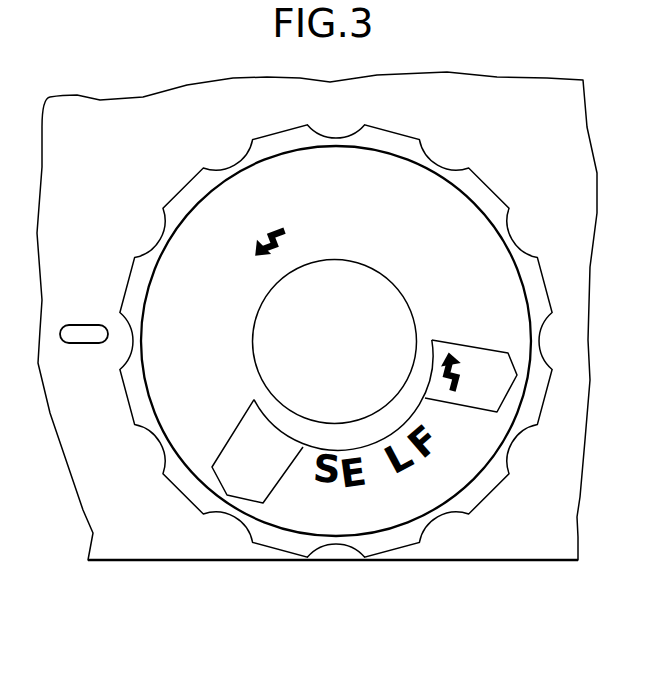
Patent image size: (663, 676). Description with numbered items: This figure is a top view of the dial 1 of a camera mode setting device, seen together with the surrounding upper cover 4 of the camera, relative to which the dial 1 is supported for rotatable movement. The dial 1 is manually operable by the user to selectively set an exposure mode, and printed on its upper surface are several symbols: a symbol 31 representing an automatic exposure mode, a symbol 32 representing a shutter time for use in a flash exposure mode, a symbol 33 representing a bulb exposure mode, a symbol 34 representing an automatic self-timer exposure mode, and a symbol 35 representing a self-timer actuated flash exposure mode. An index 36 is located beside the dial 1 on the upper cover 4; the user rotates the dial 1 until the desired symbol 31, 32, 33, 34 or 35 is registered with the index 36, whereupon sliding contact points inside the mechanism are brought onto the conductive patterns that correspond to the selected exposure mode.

The dial 1 is at (330, 520).
The upper cover 4 is at (157, 530).
The symbol representing an automatic exposure mode 31 is at (195, 312).
The symbol representing a shutter time for flash exposure mode 32 is at (230, 193).
The symbol representing a bulb exposure mode 33 is at (408, 208).
The symbol representing an automatic self-timer exposure mode 34 is at (233, 450).
The symbol representing a self-timer actuated flash exposure mode 35 is at (475, 340).
The index 36 is at (82, 325).